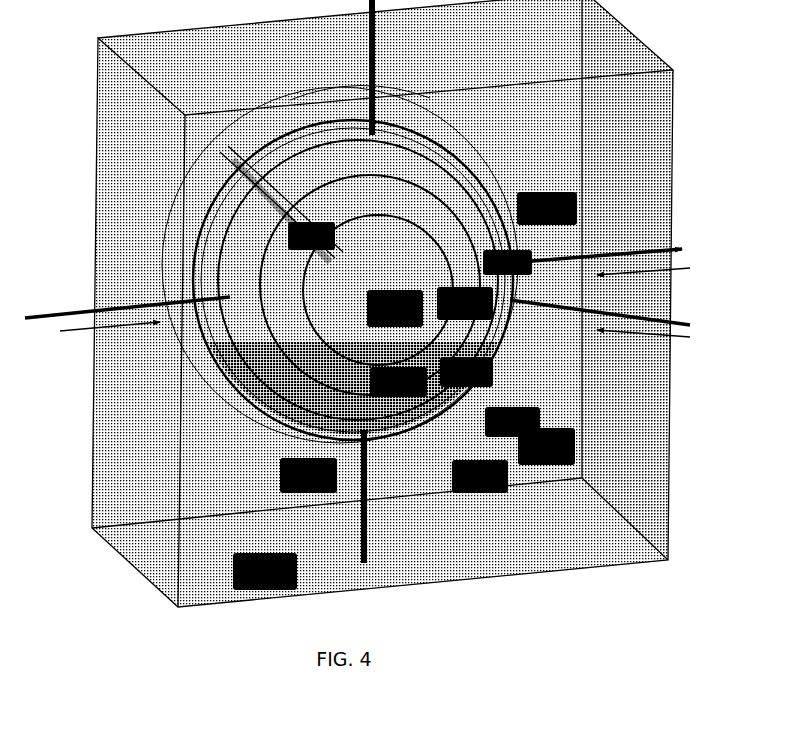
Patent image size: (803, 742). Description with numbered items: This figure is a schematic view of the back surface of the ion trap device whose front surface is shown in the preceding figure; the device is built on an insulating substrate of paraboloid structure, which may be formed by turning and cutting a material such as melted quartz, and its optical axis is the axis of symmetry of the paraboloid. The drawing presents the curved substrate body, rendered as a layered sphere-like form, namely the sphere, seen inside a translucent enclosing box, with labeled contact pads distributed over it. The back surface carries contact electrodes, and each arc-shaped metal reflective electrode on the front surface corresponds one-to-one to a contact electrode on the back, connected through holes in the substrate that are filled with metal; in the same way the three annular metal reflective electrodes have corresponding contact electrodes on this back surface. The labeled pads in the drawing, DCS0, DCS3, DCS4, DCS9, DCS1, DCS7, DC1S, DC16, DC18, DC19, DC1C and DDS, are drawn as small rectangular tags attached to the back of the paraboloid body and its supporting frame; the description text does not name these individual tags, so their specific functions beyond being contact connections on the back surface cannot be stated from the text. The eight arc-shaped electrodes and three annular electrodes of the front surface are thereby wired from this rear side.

The sensor label DCS0 is at (175, 500).
The sensor label DCS3 is at (215, 395).
The sensor label DCS4 is at (425, 385).
The sensor label DCS9 is at (495, 205).
The sensor label DC16 is at (395, 308).
The sensor label DC18 is at (465, 303).
The sensor label DC19 is at (398, 382).
The sensor label DC1C is at (466, 372).
The sensor label DCS1 is at (470, 395).
The sensor label DDS is at (546, 446).
The sensor label DCS7 is at (507, 262).
The sensor label DC1S is at (311, 236).
The spherical model sphere is at (340, 264).